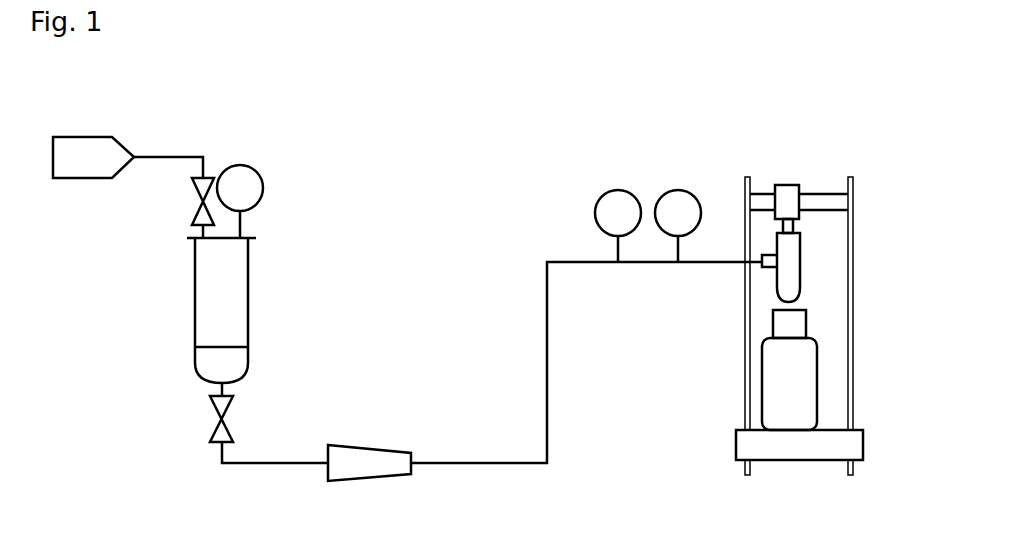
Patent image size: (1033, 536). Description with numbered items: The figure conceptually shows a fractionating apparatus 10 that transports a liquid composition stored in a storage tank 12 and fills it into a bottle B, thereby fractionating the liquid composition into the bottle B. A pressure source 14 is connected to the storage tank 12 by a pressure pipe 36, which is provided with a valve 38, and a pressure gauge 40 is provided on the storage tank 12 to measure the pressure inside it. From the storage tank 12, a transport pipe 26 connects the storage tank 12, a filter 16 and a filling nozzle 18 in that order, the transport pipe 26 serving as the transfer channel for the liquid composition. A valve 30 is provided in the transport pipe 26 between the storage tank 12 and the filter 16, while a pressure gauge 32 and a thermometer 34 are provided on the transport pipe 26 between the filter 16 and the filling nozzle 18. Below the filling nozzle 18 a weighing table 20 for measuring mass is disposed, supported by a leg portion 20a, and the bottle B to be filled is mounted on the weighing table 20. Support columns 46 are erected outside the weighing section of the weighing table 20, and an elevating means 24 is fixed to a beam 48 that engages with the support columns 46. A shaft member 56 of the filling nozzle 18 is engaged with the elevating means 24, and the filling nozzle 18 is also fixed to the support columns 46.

The fractionating apparatus 10 is at (538, 179).
The storage tank 12 is at (242, 275).
The pressure source 14 is at (101, 143).
The filter 16 is at (367, 455).
The filling nozzle 18 is at (770, 290).
The weighing table 20 is at (805, 452).
The leg portion 20a is at (745, 470).
The elevating means 24 is at (788, 192).
The transport pipe 26 is at (548, 385).
The valve 30 is at (218, 404).
The pressure gauge 32 is at (622, 191).
The thermometer 34 is at (680, 190).
The pressure pipe 36 is at (173, 156).
The valve 38 is at (199, 187).
The pressure gauge 40 is at (243, 170).
The support columns 46 is at (745, 346).
The beam 48 is at (761, 202).
The shaft member 56 is at (797, 226).
The bottle B is at (805, 384).